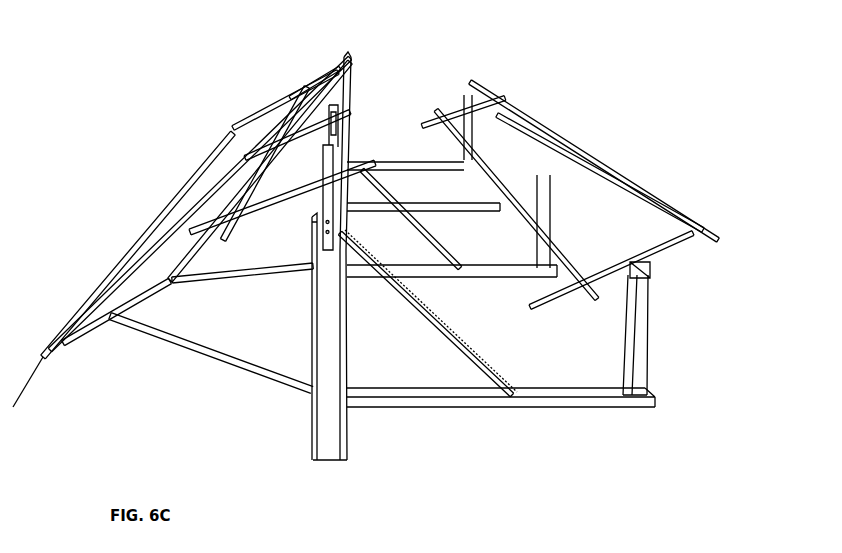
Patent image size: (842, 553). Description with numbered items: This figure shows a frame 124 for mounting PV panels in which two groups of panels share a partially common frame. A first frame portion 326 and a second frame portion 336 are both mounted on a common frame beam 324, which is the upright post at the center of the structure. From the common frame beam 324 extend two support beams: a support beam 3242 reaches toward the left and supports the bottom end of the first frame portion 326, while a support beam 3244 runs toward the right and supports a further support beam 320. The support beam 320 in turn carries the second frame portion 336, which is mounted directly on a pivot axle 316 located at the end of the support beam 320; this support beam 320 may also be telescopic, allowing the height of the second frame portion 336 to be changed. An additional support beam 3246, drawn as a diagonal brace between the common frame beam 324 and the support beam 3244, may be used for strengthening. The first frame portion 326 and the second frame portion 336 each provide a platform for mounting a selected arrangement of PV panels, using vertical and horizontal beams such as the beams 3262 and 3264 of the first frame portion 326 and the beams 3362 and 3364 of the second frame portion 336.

The frame 124 is at (181, 50).
The first frame portion 326 is at (175, 128).
The vertical and horizontal beams 3262 is at (178, 193).
The vertical and horizontal beams 3264 is at (320, 93).
The common frame beam 324 is at (332, 425).
The support beam 3242 is at (200, 360).
The support beam 3244 is at (452, 404).
The additional support beam 3246 is at (422, 313).
The second frame portion 336 is at (563, 106).
The vertical and horizontal beams 3362 is at (490, 86).
The vertical and horizontal beams 3364 is at (582, 164).
The pivot axle 316 is at (646, 277).
The support beam 320 is at (637, 360).